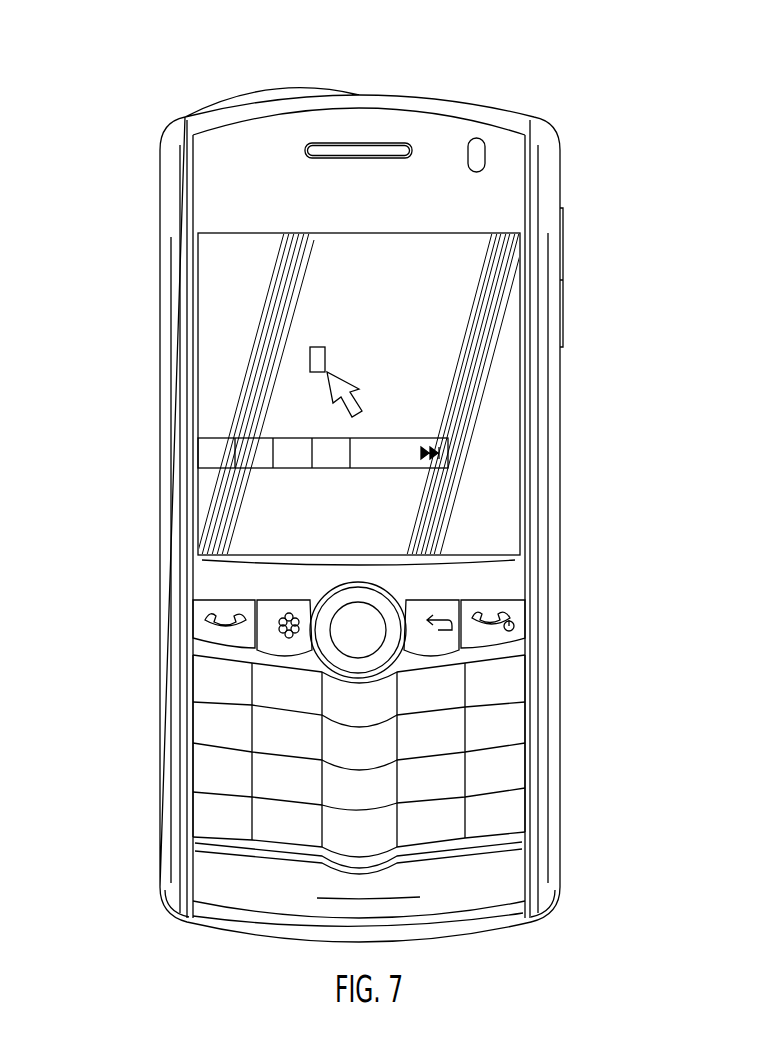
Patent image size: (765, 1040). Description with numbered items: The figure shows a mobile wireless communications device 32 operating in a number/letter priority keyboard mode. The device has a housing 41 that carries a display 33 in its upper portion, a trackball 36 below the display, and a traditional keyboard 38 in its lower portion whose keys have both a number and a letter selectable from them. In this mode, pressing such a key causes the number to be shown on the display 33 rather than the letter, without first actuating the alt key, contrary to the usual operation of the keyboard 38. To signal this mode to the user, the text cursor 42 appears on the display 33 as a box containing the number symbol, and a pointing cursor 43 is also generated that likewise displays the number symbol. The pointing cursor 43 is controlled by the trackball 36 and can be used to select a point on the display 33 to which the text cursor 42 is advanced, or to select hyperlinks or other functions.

The mobile wireless communications device 32 is at (151, 76).
The display 33 is at (440, 233).
The trackball 36 is at (375, 622).
The keyboard 38 is at (200, 800).
The housing 41 is at (160, 210).
The text cursor 42 is at (325, 357).
The pointing cursor 43 is at (357, 397).